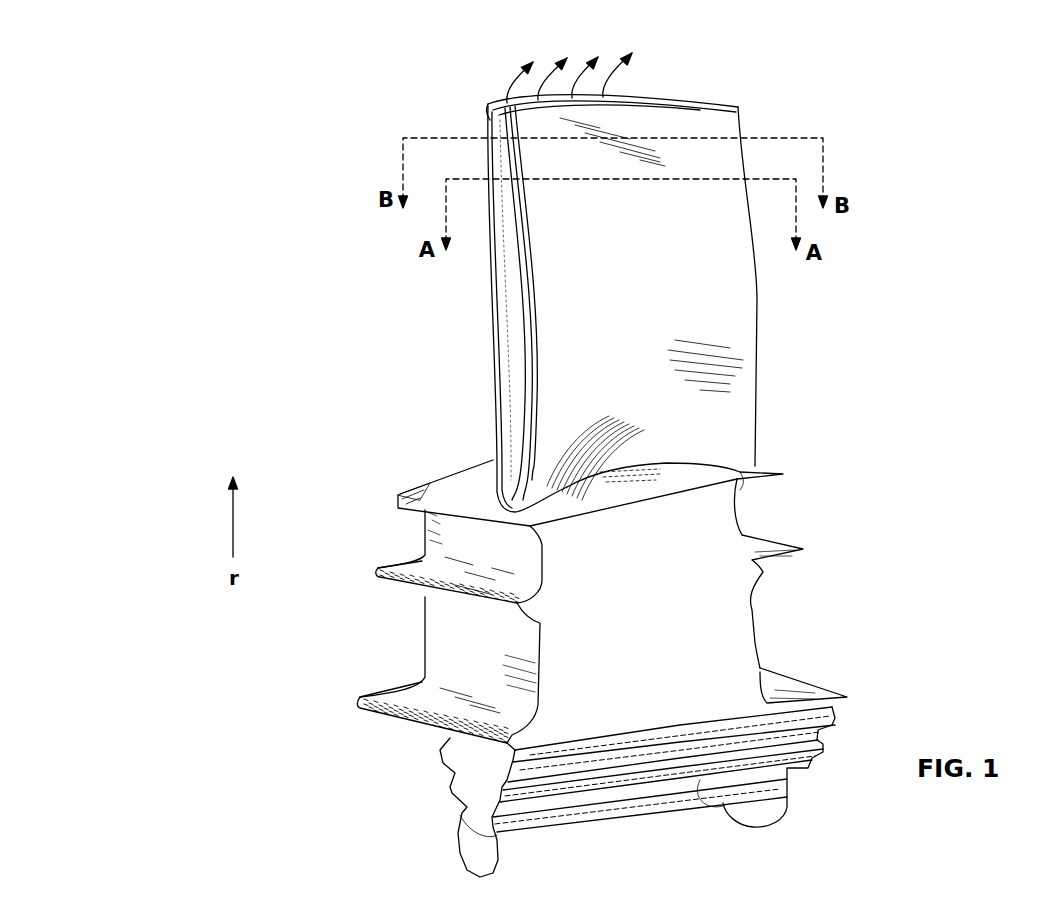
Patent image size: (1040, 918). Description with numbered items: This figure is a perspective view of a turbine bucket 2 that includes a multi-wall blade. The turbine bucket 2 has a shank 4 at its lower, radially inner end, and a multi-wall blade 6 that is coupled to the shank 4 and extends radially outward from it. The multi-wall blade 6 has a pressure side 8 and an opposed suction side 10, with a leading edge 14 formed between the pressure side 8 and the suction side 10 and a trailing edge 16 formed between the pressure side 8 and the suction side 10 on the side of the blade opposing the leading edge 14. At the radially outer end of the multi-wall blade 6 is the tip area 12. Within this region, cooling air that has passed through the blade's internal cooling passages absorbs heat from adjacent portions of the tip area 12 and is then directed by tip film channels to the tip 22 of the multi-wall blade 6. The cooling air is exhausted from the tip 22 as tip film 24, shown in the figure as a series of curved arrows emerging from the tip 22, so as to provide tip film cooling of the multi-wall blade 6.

The turbine bucket 2 is at (370, 134).
The shank 4 is at (639, 605).
The multi-wall blade 6 is at (614, 341).
The pressure side 8 is at (728, 418).
The suction side 10 is at (515, 334).
The tip area 12 is at (736, 78).
The leading edge 14 is at (503, 424).
The trailing edge 16 is at (758, 320).
The tip 22 is at (493, 100).
The tip film 24 is at (497, 60).